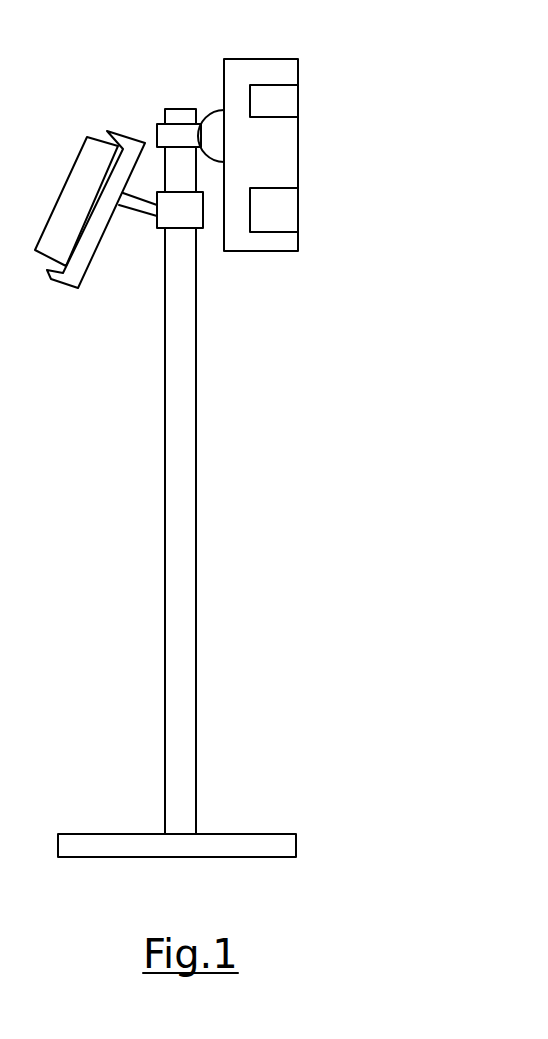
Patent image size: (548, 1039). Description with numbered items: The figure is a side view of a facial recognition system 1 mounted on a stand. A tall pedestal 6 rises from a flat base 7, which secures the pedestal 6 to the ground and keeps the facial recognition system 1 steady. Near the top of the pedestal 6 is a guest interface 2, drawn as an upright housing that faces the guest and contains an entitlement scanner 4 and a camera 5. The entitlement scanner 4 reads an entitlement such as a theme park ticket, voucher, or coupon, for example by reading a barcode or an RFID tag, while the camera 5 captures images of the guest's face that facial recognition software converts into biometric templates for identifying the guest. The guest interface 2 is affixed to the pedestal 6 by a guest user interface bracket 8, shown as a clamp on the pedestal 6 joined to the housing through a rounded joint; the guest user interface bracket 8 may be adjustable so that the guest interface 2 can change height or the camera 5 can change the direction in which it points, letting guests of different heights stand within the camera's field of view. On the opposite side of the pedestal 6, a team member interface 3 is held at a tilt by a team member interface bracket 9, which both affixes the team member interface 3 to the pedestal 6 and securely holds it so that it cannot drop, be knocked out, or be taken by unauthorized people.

The facial recognition system 1 is at (318, 868).
The guest interface 2 is at (243, 70).
The team member interface 3 is at (80, 154).
The entitlement scanner 4 is at (285, 216).
The camera 5 is at (285, 99).
The pedestal 6 is at (195, 546).
The base 7 is at (272, 838).
The guest user interface bracket 8 is at (173, 137).
The team member interface bracket 9 is at (58, 284).